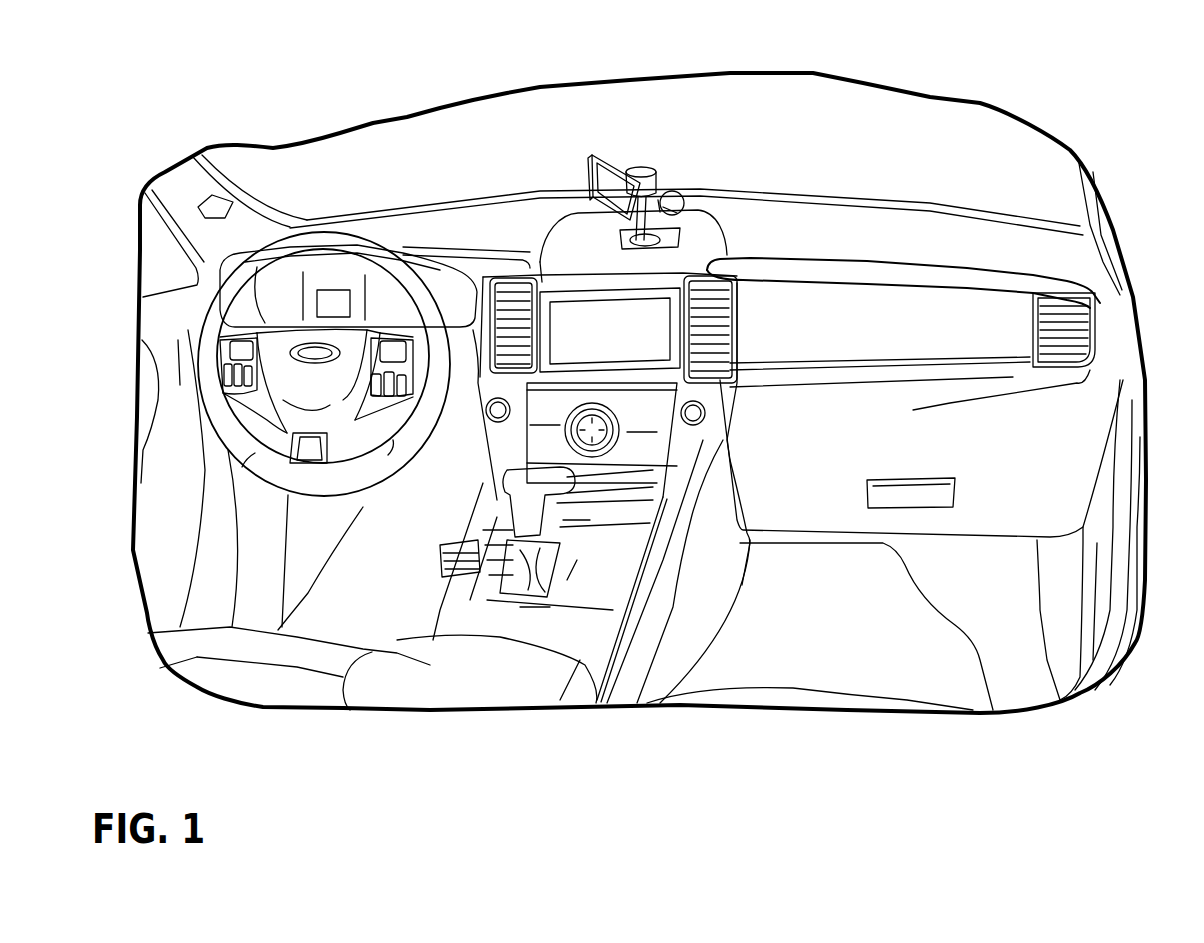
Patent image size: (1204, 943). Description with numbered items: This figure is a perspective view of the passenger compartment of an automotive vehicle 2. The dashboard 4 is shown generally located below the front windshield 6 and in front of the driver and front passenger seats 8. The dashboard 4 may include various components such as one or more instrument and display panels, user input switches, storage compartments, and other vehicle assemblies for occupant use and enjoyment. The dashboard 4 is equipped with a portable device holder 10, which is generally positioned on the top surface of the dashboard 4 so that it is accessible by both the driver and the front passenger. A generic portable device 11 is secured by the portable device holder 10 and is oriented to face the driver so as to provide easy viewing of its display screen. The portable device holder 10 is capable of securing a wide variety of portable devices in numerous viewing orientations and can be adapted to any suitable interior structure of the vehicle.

The automotive vehicle 2 is at (373, 42).
The dashboard 4 is at (450, 230).
The front windshield 6 is at (930, 118).
The driver and front passenger seats 8 is at (273, 683).
The portable device holder 10 is at (665, 167).
The portable device 11 is at (593, 185).